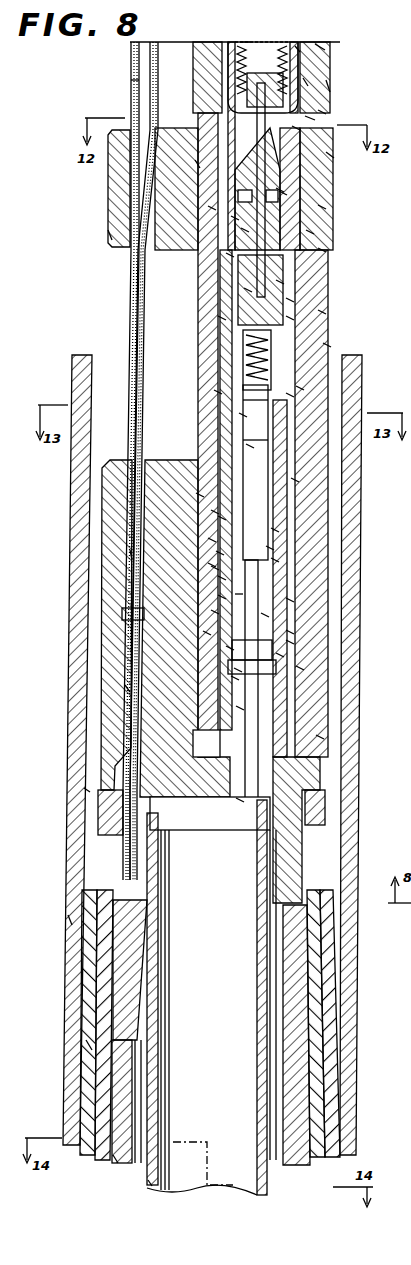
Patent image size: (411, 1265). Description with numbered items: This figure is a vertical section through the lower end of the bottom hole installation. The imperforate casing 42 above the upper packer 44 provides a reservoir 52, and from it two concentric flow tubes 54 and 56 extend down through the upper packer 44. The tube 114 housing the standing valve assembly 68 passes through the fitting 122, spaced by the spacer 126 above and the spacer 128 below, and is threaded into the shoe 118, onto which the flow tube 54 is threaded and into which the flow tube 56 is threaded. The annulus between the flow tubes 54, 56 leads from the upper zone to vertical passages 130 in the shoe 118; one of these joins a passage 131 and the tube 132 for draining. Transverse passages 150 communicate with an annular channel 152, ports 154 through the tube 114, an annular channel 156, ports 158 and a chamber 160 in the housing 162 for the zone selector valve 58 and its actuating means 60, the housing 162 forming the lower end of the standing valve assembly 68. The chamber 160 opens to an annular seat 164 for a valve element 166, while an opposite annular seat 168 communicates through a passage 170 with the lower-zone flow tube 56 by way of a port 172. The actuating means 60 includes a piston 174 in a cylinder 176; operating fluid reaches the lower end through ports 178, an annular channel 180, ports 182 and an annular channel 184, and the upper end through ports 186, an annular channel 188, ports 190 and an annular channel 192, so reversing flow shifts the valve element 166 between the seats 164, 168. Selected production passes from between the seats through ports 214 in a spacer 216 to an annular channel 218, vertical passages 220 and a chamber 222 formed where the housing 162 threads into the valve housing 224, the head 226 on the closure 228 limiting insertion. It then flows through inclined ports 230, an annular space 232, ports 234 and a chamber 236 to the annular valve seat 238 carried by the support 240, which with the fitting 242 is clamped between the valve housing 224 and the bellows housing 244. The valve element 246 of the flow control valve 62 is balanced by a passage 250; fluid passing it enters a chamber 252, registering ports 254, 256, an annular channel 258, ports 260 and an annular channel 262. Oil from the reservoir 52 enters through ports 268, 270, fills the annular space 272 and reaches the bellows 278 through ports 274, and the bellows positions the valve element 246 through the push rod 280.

The imperforate casing 42 is at (70, 920).
The upper packer 44 is at (90, 1045).
The reservoir 52 is at (88, 790).
The flow tube 54 is at (115, 1160).
The flow tube 56 is at (150, 1183).
The zone selector valve 58 is at (280, 655).
The actuating means 60 is at (270, 548).
The flow control valve 62 is at (280, 282).
The standing valve assembly 68 is at (305, 82).
The tube 114 is at (320, 48).
The shoe 118 is at (320, 737).
The fitting 122 is at (110, 235).
The spacer 126 is at (327, 86).
The spacer 128 is at (322, 312).
The vertical passages 130 is at (127, 690).
The passage 131 is at (132, 555).
The tube 132 is at (133, 85).
The transverse passages 150 is at (136, 618).
The annular channel 152 is at (222, 597).
The ports 154 is at (234, 586).
The annular channel 156 is at (207, 633).
The ports 158 is at (215, 612).
The chamber 160 is at (265, 615).
The housing 162 is at (295, 480).
The annular seat 164 is at (230, 648).
The valve element 166 is at (238, 670).
The annular seat 168 is at (235, 678).
The passage 170 is at (240, 708).
The port 172 is at (240, 800).
The piston 174 is at (275, 530).
The cylinder 176 is at (275, 560).
The ports 178 is at (222, 578).
The annular channel 180 is at (220, 553).
The ports 182 is at (212, 565).
The annular channel 184 is at (215, 568).
The ports 186 is at (212, 540).
The annular channel 188 is at (200, 495).
The ports 190 is at (215, 512).
The annular channel 192 is at (222, 518).
The ports 214 is at (300, 668).
The spacer 216 is at (290, 632).
The annular channel 218 is at (290, 642).
The vertical passages 220 is at (290, 600).
The chamber 222 is at (290, 395).
The valve housing 224 is at (300, 388).
The head 226 is at (243, 415).
The closure 228 is at (250, 446).
The inclined ports 230 is at (218, 392).
The annular space 232 is at (222, 318).
The ports 234 is at (290, 318).
The chamber 236 is at (290, 300).
The annular valve seat 238 is at (322, 250).
The support 240 is at (310, 232).
The fitting 242 is at (322, 207).
The bellows housing 244 is at (330, 155).
The valve element 246 is at (327, 345).
The passage 250 is at (248, 290).
The chamber 252 is at (230, 255).
The ports 254 is at (283, 193).
The ports 256 is at (280, 190).
The annular channel 258 is at (235, 218).
The ports 260 is at (212, 208).
The annular channel 262 is at (181, 160).
The ports 268 is at (322, 112).
The ports 270 is at (310, 118).
The annular space 272 is at (297, 50).
The ports 274 is at (296, 128).
The bellows 278 is at (245, 42).
The push rod 280 is at (245, 230).